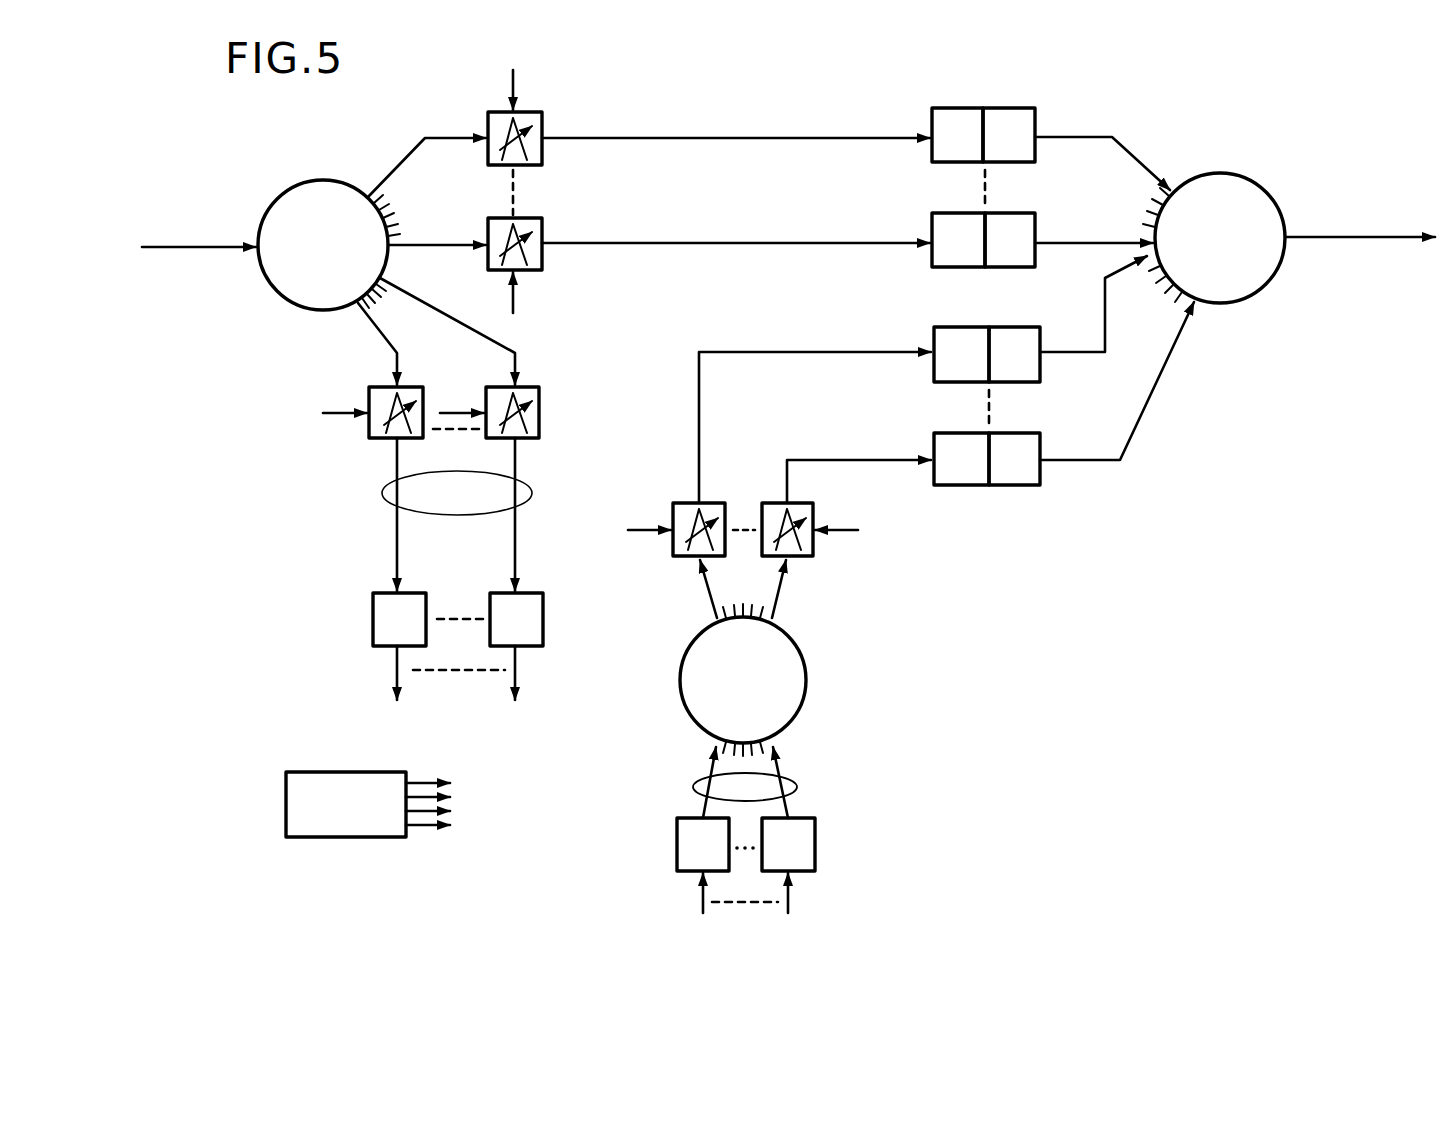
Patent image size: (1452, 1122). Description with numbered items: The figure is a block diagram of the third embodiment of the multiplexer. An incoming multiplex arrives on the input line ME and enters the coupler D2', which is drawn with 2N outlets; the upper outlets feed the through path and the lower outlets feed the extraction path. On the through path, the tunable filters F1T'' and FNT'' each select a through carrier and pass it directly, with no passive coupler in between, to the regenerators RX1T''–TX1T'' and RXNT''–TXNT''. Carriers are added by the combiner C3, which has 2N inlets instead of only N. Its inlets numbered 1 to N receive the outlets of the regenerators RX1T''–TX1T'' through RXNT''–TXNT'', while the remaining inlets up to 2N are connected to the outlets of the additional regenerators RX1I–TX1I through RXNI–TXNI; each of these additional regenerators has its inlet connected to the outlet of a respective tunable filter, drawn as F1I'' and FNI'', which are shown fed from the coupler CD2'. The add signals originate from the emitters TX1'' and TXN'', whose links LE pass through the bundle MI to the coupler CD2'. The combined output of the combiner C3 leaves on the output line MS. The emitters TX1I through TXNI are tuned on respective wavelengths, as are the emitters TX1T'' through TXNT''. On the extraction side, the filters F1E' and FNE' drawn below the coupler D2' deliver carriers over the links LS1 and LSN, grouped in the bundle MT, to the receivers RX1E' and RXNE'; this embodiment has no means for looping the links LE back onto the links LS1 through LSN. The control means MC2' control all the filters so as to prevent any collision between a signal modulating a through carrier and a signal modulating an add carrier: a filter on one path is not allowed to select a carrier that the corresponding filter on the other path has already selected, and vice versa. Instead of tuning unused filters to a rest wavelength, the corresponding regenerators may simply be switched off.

The 1x2N star coupler / demultiplexer D2' is at (329, 223).
The input fiber carrying wavelengths λ1...λN ME is at (177, 252).
The combiner inlet 1 is at (390, 172).
The combiner inlet N is at (436, 244).
The combiner inlet 2N is at (381, 322).
The tunable filter F1T'' is at (530, 136).
The tunable filter FNT'' is at (534, 267).
The regenerator receiver RX1T'' is at (950, 103).
The regenerator emitter TX1T'' is at (1025, 103).
The regenerator receiver RXNT'' is at (926, 269).
The regenerator emitter TXNT'' is at (1032, 269).
The additional regenerator receiver RX1I is at (940, 372).
The additional regenerator emitter TX1I is at (1018, 372).
The additional regenerator receiver RXNI is at (966, 482).
The additional regenerator emitter TXNI is at (1015, 480).
The combiner C3 is at (1218, 175).
The output fiber carrying wavelengths λ'1...λ'N MS is at (1345, 243).
The tunable filter 1 (extraction) F1E' is at (373, 386).
The tunable filter N (extraction) FNE' is at (509, 384).
The link LS1 is at (397, 542).
The link LSN is at (517, 548).
The output trunk bundle MT is at (385, 490).
The extraction receiver 1 RX1E' is at (363, 646).
The extraction receiver N RXNE' is at (552, 646).
The control means MC2' is at (368, 784).
The tunable filter 1 (insertion) F1I'' is at (676, 564).
The tunable filter N (insertion) FNI'' is at (810, 564).
The NxN star coupler CD2' is at (703, 658).
The input trunk bundle MI is at (693, 787).
The links LE is at (770, 790).
The insertion transmitter 1 TX1'' is at (666, 865).
The insertion transmitter N TXN'' is at (821, 865).